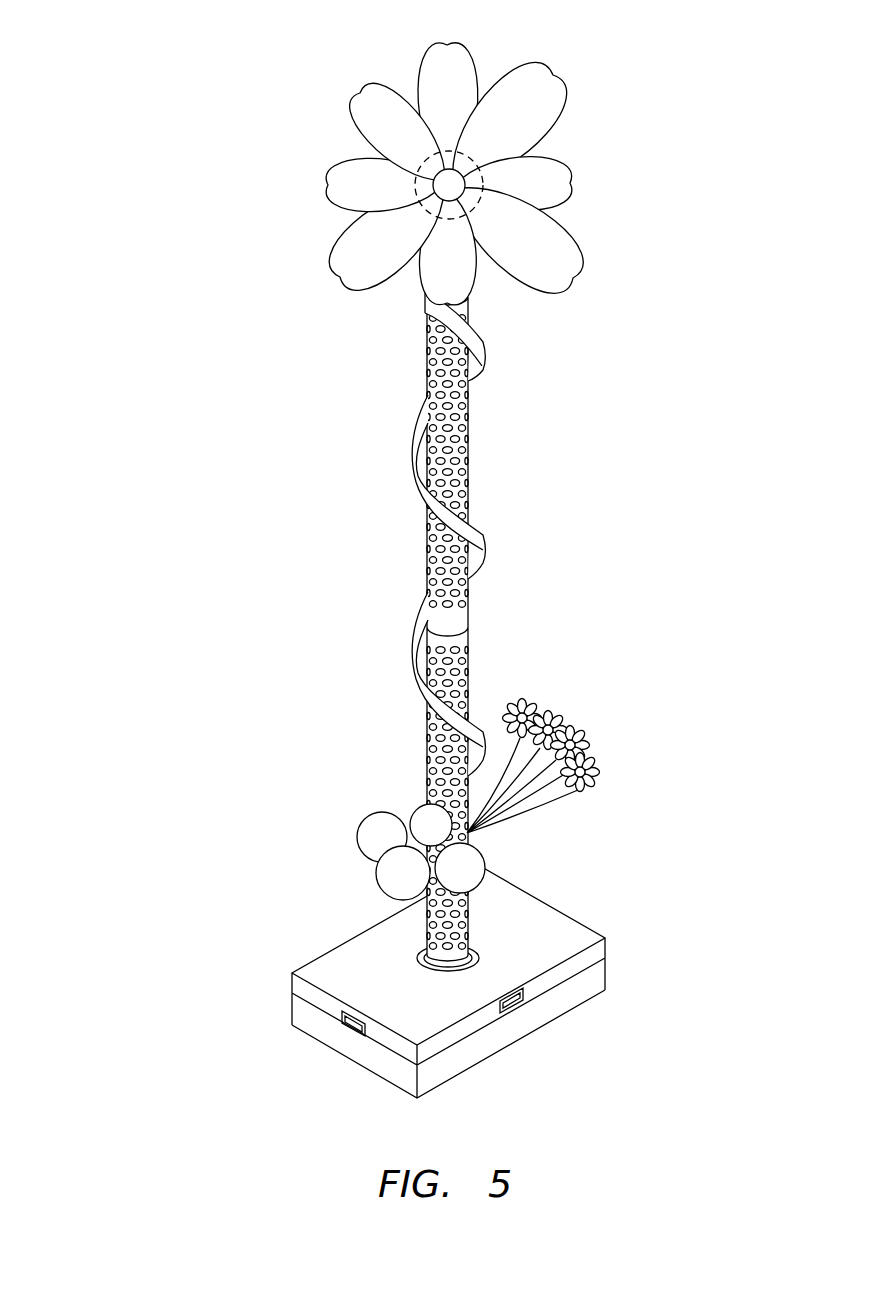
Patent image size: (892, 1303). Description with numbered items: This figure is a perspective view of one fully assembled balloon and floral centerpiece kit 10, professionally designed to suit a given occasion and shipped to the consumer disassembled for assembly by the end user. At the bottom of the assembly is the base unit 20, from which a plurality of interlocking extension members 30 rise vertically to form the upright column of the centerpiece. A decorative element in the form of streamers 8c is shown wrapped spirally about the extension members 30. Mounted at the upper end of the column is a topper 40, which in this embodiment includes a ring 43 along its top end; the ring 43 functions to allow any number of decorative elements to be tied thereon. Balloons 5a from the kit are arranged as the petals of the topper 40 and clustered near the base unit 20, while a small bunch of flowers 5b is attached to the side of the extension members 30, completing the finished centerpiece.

The balloon and floral centerpiece kit 10 is at (200, 120).
The base unit 20 is at (307, 930).
The interlocking extension members 30 is at (422, 552).
The streamers 8c is at (476, 548).
The balloons 5a is at (375, 108).
The flowers 5b is at (525, 790).
The topper 40 is at (418, 285).
The ring 43 is at (451, 169).